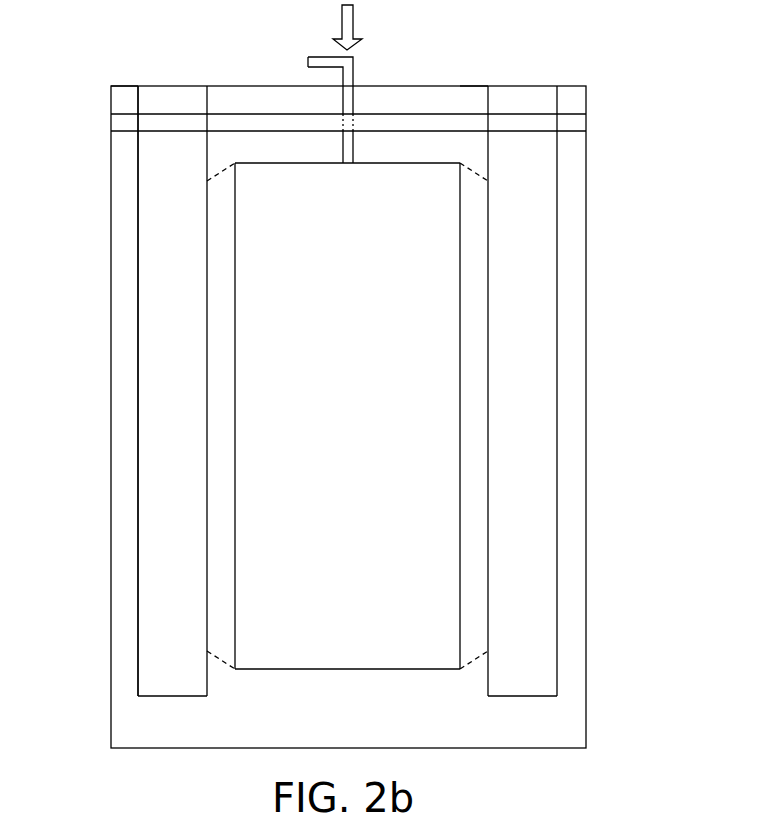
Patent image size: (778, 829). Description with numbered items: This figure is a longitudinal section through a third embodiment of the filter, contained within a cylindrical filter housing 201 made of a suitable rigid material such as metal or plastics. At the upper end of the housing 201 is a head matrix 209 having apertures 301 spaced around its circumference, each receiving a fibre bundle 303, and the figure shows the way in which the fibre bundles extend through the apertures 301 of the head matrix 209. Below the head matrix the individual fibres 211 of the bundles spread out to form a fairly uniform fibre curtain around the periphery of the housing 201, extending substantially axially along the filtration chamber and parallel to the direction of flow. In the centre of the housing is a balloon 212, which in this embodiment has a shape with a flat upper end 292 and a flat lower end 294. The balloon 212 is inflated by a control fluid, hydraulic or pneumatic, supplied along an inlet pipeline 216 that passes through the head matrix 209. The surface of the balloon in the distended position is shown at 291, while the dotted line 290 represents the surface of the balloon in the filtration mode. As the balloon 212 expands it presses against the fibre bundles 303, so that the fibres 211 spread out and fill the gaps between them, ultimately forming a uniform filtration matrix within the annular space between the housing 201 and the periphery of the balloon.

The filter housing 201 is at (586, 399).
The head matrix 209 is at (128, 113).
The fibres 211 is at (157, 263).
The balloon 212 is at (235, 365).
The inlet pipeline 216 is at (353, 58).
The balloon surface in filtration mode 290 is at (157, 436).
The balloon surface in distended position 291 is at (235, 515).
The flat upper end of balloon 292 is at (263, 163).
The flat lower end of balloon 294 is at (347, 670).
The fibre bundle aperture 301 is at (185, 98).
The fibre bundle 303 is at (542, 160).